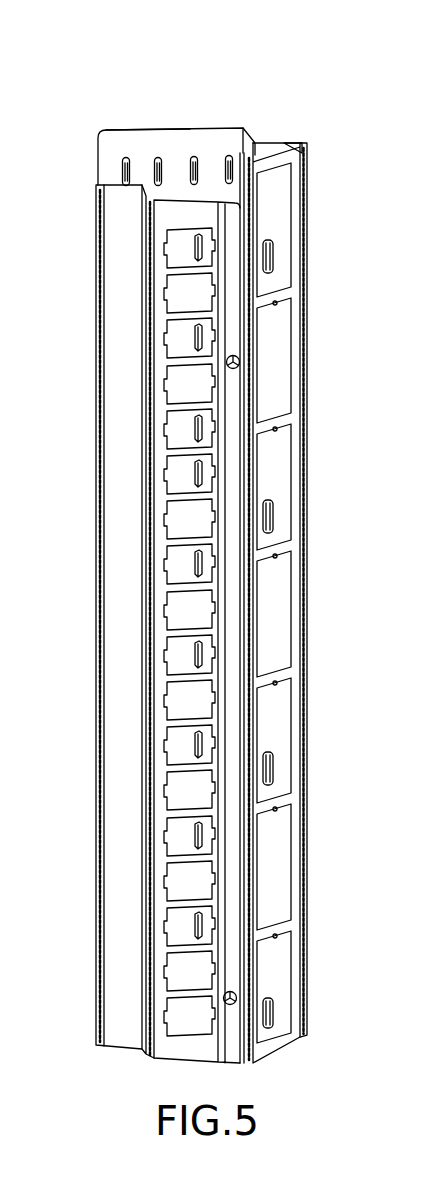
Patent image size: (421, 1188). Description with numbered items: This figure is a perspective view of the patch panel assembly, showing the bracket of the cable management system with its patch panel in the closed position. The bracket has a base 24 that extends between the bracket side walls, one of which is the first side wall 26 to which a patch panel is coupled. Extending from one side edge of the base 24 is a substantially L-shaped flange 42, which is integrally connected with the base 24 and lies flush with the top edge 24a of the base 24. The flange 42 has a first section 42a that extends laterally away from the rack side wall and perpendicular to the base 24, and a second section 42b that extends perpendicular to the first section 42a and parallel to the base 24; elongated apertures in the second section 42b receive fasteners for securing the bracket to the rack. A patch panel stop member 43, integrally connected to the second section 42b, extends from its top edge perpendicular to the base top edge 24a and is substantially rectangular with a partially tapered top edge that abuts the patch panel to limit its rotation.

The base 24 is at (190, 124).
The top edge 24a is at (117, 130).
The first side wall 26 is at (95, 176).
The flange 42 is at (271, 141).
The first section 42a is at (276, 126).
The second section 42b is at (284, 145).
The patch panel stop member 43 is at (301, 149).